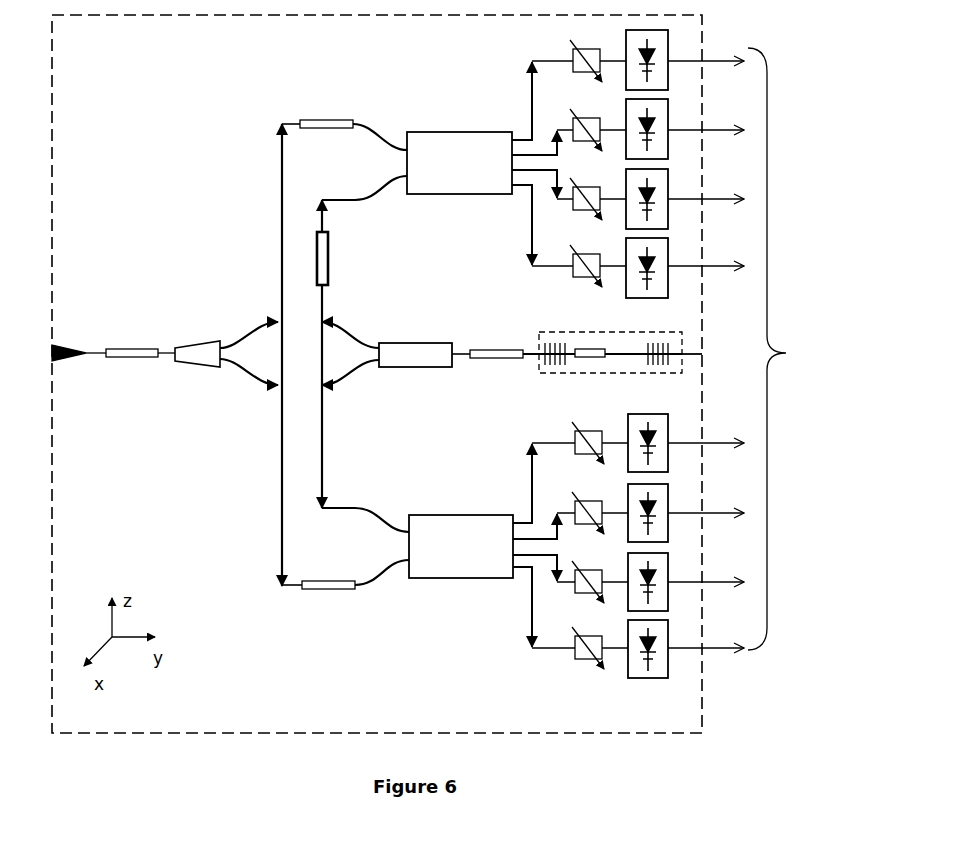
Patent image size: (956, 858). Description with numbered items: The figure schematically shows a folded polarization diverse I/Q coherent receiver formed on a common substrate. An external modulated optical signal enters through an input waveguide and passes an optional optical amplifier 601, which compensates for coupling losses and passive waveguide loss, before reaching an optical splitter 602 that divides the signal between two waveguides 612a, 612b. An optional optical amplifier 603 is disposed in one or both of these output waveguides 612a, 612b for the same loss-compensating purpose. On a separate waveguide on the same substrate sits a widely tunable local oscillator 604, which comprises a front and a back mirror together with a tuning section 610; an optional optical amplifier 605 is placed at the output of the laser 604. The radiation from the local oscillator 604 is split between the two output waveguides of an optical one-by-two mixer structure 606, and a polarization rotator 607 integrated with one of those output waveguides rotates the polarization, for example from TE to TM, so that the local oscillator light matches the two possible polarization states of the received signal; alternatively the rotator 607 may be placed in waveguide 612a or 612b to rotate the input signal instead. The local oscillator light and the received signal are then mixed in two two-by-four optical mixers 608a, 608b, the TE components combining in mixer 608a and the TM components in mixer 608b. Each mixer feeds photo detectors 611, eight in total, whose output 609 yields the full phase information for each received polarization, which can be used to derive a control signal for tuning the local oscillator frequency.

The optical amplifier 601 is at (135, 340).
The optical splitter 602 is at (190, 367).
The optical amplifier 603 is at (330, 115).
The widely tunable local oscillator 604 is at (688, 354).
The optical amplifier 605 is at (495, 360).
The optical 1×2 mixer structure 606 is at (415, 370).
The polarization rotator 607 is at (332, 250).
The 2×4 optical mixer 608a is at (458, 127).
The 2×4 optical mixer 608b is at (440, 573).
The output 609 is at (795, 349).
The tuning section 610 is at (592, 356).
The photo detector 611 is at (662, 50).
The waveguide 612a is at (286, 222).
The waveguide 612b is at (272, 500).